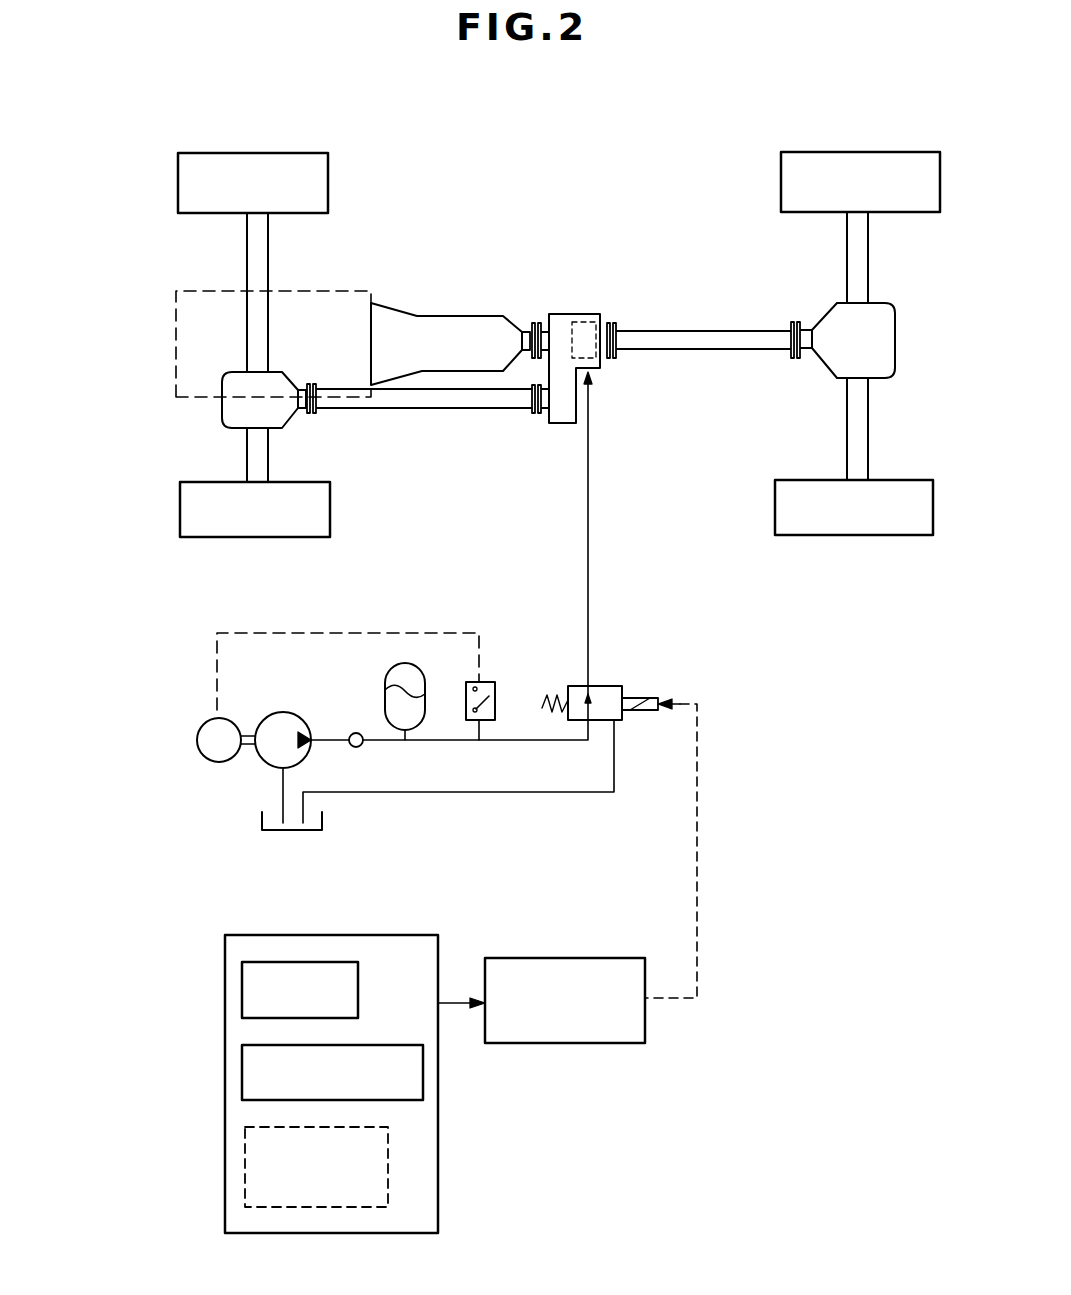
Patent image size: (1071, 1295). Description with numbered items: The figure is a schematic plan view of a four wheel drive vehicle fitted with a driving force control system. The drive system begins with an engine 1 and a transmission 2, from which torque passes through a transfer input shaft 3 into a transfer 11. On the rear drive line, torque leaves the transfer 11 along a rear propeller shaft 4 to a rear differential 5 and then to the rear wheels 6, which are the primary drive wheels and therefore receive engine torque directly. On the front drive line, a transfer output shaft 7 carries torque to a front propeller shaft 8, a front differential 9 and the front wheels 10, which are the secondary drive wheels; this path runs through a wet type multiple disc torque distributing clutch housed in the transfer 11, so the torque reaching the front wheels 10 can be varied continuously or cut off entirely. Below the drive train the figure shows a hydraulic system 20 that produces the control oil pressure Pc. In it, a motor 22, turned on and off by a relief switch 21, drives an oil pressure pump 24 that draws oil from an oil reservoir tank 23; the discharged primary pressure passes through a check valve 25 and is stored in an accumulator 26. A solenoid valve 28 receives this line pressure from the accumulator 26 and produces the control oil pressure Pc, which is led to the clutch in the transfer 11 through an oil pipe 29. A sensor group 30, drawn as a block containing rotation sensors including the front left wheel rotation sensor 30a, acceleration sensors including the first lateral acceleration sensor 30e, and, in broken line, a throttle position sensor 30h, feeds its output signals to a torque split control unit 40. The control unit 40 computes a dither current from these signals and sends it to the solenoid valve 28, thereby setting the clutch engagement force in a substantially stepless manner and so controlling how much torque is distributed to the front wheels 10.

The engine 1 is at (338, 291).
The transmission 2 is at (430, 316).
The transfer input shaft 3 is at (545, 330).
The rear propeller shaft 4 is at (690, 330).
The rear differential 5 is at (876, 306).
The rear wheels 6 is at (813, 152).
The transfer output shaft 7 is at (548, 413).
The front propeller shaft 8 is at (462, 408).
The front differential 9 is at (222, 420).
The front wheels 10 is at (224, 153).
The transfer 11 is at (571, 314).
The hydraulic system 20 is at (718, 680).
The relief switch 21 is at (496, 690).
The motor 22 is at (232, 720).
The oil reservoir tank 23 is at (327, 820).
The oil pressure pump 24 is at (292, 712).
The check valve 25 is at (355, 733).
The accumulator 26 is at (420, 690).
The solenoid valve 28 is at (578, 686).
The oil pipe 29 is at (588, 468).
The sensor group 30 is at (273, 1055).
The front left wheel rotation sensor 30a is at (242, 985).
The first lateral acceleration sensor 30e is at (242, 1076).
The throttle position sensor 30h is at (245, 1140).
The torque split control unit 40 is at (557, 958).